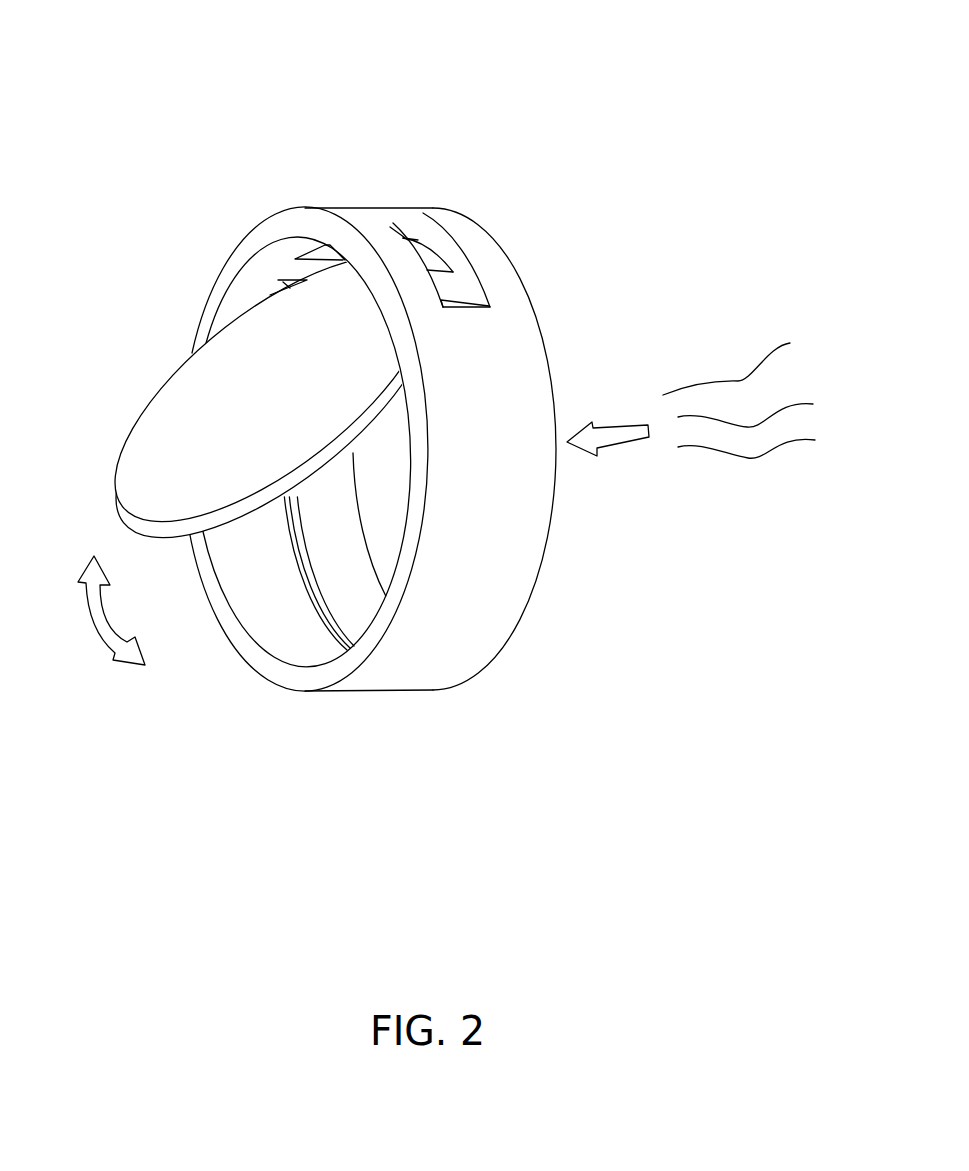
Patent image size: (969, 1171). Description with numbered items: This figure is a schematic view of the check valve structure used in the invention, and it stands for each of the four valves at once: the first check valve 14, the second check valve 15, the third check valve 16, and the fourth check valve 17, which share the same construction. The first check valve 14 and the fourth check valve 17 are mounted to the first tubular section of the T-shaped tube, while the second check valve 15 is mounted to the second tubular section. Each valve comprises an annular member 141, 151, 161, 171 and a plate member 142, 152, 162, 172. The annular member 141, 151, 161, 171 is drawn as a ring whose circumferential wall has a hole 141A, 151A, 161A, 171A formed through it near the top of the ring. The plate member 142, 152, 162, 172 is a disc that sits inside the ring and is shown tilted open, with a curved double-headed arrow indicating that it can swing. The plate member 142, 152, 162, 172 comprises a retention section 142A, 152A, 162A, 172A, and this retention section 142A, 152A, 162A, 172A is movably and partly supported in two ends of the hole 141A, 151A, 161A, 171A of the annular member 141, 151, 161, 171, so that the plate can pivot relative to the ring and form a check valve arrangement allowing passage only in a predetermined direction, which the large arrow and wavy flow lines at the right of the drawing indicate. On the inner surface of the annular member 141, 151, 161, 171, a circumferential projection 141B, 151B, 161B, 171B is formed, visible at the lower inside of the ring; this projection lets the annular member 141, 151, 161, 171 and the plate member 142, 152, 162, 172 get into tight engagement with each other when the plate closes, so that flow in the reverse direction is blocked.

The first check valve 14 is at (421, 382).
The second check valve 15 is at (421, 382).
The third check valve 16 is at (421, 382).
The fourth check valve 17 is at (126, 41).
The annular member 141 is at (484, 449).
The annular member 151 is at (484, 449).
The annular member 161 is at (484, 449).
The annular member 171 is at (487, 377).
The plate member 142 is at (247, 397).
The plate member 152 is at (247, 397).
The plate member 162 is at (247, 397).
The plate member 172 is at (165, 442).
The hole 141A is at (575, 219).
The hole 151A is at (575, 219).
The hole 161A is at (575, 219).
The hole 171A is at (437, 253).
The circumferential projection 141B is at (306, 621).
The circumferential projection 151B is at (306, 621).
The circumferential projection 161B is at (306, 621).
The circumferential projection 171B is at (320, 577).
The retention section 142A is at (548, 255).
The retention section 152A is at (548, 255).
The retention section 162A is at (548, 255).
The retention section 172A is at (452, 288).